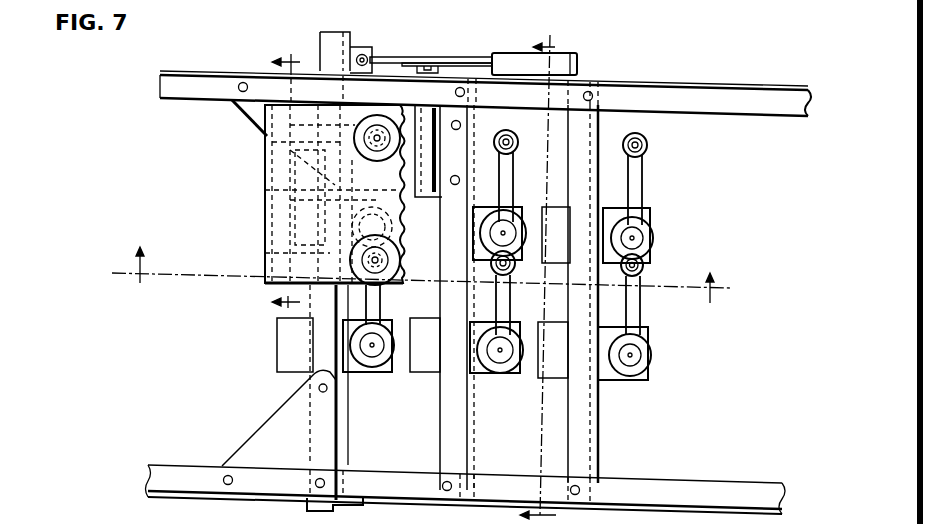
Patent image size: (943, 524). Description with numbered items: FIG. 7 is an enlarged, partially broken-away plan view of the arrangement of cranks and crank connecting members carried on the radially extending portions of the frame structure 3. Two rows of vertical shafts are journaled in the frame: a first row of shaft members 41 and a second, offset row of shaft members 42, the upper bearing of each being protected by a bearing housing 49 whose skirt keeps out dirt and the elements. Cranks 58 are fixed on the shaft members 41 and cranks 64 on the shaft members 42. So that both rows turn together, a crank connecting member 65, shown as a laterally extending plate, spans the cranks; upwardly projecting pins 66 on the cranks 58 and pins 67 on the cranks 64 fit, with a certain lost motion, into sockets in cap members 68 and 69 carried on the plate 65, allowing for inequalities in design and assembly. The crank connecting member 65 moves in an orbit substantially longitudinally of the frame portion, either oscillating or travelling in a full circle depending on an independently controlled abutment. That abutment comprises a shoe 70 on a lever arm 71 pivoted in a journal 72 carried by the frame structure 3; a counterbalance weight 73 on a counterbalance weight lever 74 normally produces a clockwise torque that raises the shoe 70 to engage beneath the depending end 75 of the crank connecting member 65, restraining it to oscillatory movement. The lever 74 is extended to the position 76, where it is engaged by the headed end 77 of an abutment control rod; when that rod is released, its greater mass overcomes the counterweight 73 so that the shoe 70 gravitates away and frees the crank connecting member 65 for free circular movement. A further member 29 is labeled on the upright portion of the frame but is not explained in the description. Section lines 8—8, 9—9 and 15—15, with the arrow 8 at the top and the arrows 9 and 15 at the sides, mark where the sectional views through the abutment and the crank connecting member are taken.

The frame structure 3 is at (730, 102).
The section line 8— 8 is at (544, 36).
The section line 9— 9 is at (415, 275).
The section line 15— 15 is at (270, 178).
The upright frame post 29 is at (345, 48).
The shaft member 41 is at (372, 345).
The shaft member 42 is at (640, 237).
The bearing housing 49 is at (363, 362).
The crank 58 is at (372, 307).
The crank 64 is at (507, 183).
The crank connecting member 65 is at (295, 263).
The pin 66 is at (647, 272).
The pin 67 is at (648, 143).
The cap member 68 is at (372, 262).
The cap member 69 is at (253, 127).
The shoe 70 is at (262, 183).
The lever arm 71 is at (262, 220).
The journal 72 is at (420, 123).
The counterbalance weight 73 is at (572, 58).
The counterbalance weight lever 74 is at (467, 56).
The depending end 75 is at (262, 254).
The extended position of counterbalance lever 76 is at (382, 58).
The headed end 77 is at (364, 55).